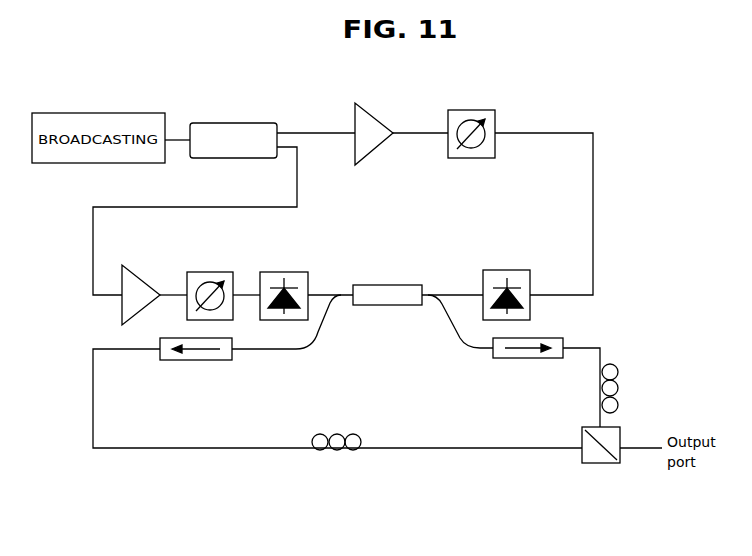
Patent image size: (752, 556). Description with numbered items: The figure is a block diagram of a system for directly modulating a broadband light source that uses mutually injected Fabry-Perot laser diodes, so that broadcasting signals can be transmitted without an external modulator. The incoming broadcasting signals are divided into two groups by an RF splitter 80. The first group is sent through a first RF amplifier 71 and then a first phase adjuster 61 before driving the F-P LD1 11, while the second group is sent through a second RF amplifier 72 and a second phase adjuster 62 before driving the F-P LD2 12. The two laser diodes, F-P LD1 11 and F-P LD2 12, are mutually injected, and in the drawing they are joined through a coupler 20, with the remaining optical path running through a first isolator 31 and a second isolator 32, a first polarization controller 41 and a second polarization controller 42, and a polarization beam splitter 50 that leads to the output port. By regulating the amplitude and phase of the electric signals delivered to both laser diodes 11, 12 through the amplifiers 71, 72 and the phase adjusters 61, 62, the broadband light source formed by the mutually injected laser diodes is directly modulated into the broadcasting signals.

The RF splitter 80 is at (230, 122).
The second RF amplifier 72 is at (375, 111).
The second phase adjuster 62 is at (463, 110).
The first RF amplifier 71 is at (134, 270).
The first phase adjuster 61 is at (208, 271).
The F-P LD1 11 is at (310, 281).
The F-P LD2 12 is at (531, 305).
The coupler 20 is at (382, 306).
The optical isolator Out 1 31 is at (553, 360).
The optical isolator Out 2 32 is at (168, 361).
The polarization controller PC1 41 is at (619, 406).
The polarization controller PC2 42 is at (336, 452).
The polarization beam splitter PBS 50 is at (600, 468).